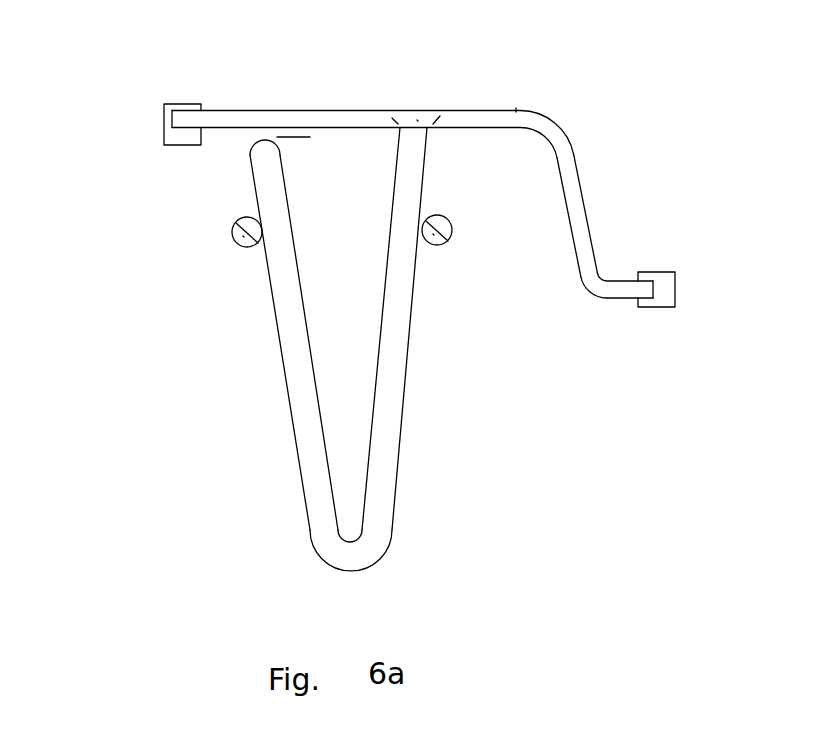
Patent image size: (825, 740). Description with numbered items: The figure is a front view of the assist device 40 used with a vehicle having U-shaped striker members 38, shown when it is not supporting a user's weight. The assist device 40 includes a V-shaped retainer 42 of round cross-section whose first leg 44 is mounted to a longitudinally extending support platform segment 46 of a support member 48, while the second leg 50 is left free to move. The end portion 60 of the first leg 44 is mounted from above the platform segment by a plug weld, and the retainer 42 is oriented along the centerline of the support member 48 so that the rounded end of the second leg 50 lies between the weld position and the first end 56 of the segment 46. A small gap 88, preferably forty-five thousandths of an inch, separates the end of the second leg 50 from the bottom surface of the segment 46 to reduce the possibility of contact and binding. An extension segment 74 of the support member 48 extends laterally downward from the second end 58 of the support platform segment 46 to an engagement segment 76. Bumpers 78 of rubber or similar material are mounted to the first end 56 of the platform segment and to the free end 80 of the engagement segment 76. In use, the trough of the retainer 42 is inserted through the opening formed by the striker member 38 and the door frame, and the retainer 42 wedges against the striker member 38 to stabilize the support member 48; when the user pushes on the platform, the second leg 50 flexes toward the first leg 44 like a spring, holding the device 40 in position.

The U-shaped striker member 38 is at (232, 230).
The assist device 40 is at (421, 320).
The V-shaped retainer 42 is at (354, 343).
The first leg 44 is at (415, 303).
The support platform segment 46 is at (373, 95).
The support member 48 is at (633, 210).
The second leg 50 is at (297, 373).
The first end 56 is at (187, 120).
The second end 58 is at (517, 108).
The end portion 60 is at (423, 133).
The extension segment 74 is at (582, 193).
The engagement segment 76 is at (615, 302).
The bumpers 78 is at (164, 126).
The free end 80 is at (653, 287).
The gap 88 is at (289, 98).